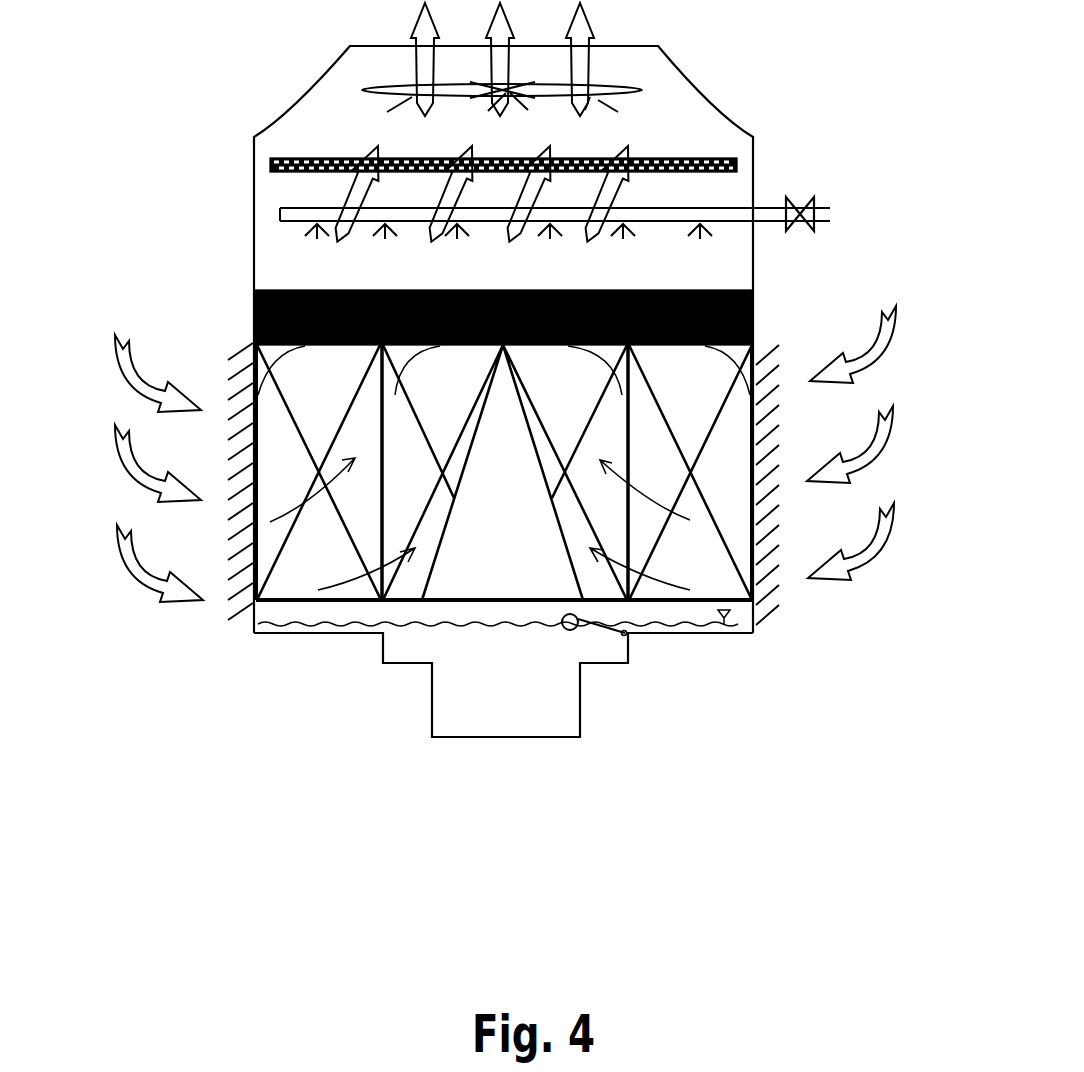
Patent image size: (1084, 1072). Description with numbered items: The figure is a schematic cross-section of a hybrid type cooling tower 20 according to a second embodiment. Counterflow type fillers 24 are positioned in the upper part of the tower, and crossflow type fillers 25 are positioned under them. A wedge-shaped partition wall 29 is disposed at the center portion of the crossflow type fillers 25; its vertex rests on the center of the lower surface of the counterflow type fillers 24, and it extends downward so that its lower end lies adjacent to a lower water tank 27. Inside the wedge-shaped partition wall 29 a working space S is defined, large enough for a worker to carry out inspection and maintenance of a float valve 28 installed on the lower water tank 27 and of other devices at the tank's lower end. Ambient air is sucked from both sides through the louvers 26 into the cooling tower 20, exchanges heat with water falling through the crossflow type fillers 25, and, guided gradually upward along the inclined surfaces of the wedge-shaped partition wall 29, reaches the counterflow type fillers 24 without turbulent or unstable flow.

The hybrid type cooling tower 20 is at (253, 90).
The counterflow type fillers 24 is at (753, 310).
The crossflow type fillers 25 is at (703, 463).
The louvers 26 is at (753, 606).
The lower water tank 27 is at (755, 615).
The float valve 28 is at (578, 628).
The wedge-shaped partition wall 29 is at (553, 492).